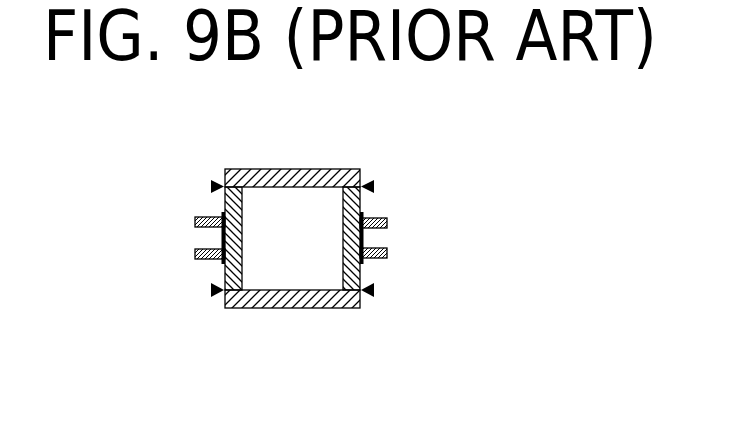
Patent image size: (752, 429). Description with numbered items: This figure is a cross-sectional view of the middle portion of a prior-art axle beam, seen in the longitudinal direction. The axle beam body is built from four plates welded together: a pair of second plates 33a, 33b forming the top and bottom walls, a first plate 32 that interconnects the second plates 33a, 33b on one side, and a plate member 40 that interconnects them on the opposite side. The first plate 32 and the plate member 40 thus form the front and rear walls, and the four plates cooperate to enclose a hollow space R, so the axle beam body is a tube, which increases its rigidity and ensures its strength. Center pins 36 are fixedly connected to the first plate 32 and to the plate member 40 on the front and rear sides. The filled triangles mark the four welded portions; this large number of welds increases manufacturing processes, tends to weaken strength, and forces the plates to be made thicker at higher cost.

The first plate 32 is at (224, 206).
The second plate 33a is at (300, 170).
The second plate 33b is at (303, 308).
The center pin 36 is at (199, 260).
The plate member 40 is at (360, 198).
The space R is at (338, 193).